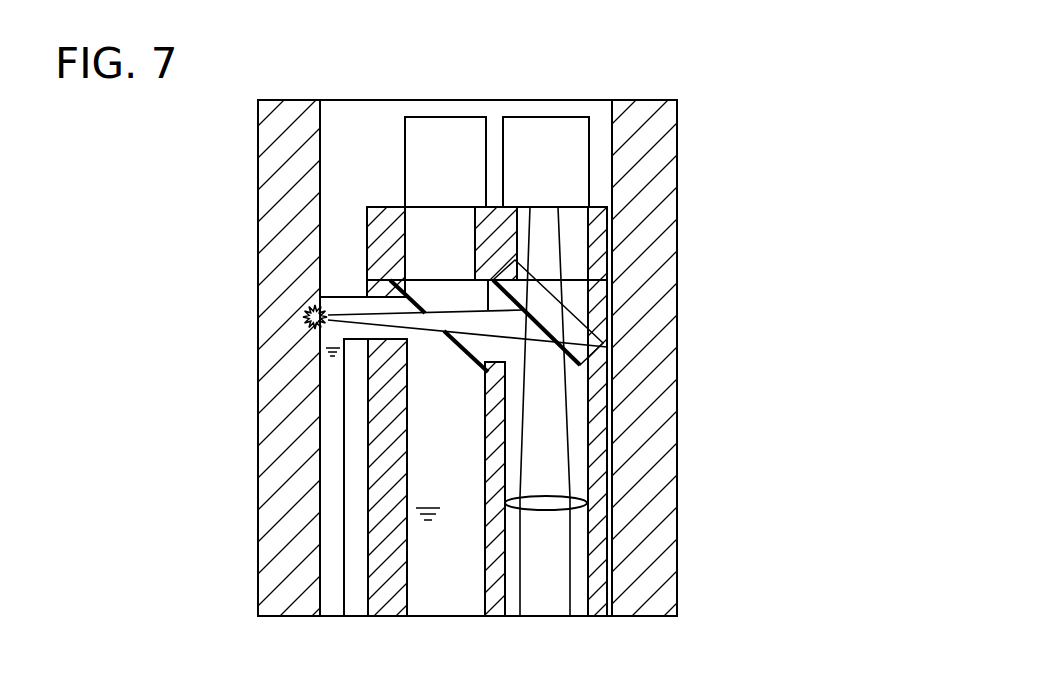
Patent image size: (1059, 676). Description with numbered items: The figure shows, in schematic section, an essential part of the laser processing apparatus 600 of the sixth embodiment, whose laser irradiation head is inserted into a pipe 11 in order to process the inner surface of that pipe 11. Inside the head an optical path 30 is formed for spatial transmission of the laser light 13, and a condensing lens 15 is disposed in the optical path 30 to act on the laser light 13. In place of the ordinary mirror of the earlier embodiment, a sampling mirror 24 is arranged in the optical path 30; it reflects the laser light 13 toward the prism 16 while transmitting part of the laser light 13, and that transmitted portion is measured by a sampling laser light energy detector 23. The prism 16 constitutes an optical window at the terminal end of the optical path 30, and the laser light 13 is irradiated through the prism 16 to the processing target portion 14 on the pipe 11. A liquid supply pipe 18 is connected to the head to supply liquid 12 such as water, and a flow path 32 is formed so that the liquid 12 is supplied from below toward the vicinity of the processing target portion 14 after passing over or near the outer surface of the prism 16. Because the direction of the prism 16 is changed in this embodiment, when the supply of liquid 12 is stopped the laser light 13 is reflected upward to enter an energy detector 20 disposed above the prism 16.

The laser processing apparatus 600 is at (588, 84).
The pipe 11 is at (662, 142).
The liquid 12 is at (330, 427).
The laser light 13 is at (545, 598).
The processing target portion 14 is at (300, 318).
The condensing lens 15 is at (588, 495).
The prism 16 is at (428, 288).
The liquid supply pipe 18 is at (445, 592).
The energy detector 20 is at (453, 117).
The sampling laser light energy detector 23 is at (548, 117).
The sampling mirror 24 is at (600, 350).
The optical path 30 is at (578, 403).
The flow path 32 is at (423, 413).